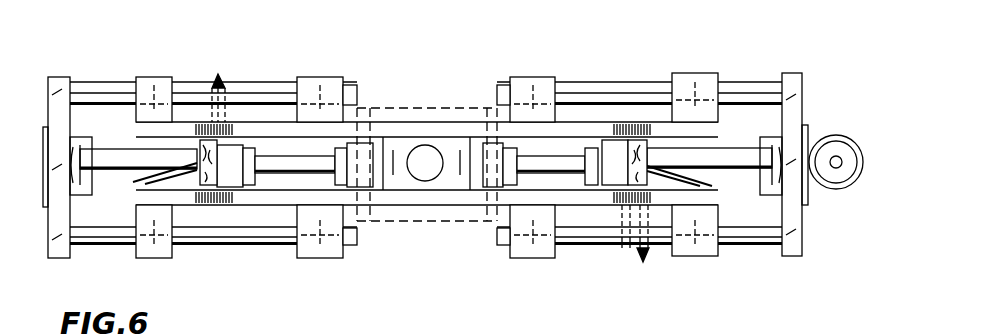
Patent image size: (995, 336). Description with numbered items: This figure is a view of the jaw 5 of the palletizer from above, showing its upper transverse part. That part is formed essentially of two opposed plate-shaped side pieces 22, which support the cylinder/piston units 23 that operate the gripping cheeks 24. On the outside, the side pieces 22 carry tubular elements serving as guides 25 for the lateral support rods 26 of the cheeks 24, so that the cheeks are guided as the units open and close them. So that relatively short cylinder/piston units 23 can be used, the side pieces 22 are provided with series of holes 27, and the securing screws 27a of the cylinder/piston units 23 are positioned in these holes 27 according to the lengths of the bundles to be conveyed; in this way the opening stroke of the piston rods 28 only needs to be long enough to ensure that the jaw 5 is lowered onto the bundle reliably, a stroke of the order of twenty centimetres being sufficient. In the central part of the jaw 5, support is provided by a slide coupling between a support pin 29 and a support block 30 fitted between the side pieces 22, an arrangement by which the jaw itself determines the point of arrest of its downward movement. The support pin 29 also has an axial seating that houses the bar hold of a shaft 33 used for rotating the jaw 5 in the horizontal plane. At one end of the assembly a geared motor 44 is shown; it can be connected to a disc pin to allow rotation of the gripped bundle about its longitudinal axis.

The jaw 5 is at (651, 70).
The side pieces 22 is at (602, 125).
The cylinder/piston units 23 is at (290, 172).
The gripping cheeks 24 is at (58, 82).
The guides 25 is at (163, 78).
The lateral support rods 26 is at (266, 83).
The holes 27 is at (643, 275).
The securing screws 27a is at (150, 182).
The piston rods 28 is at (112, 160).
The support pin 29 is at (428, 158).
The support block 30 is at (393, 145).
The shaft 33 is at (418, 323).
The geared motor 44 is at (838, 152).